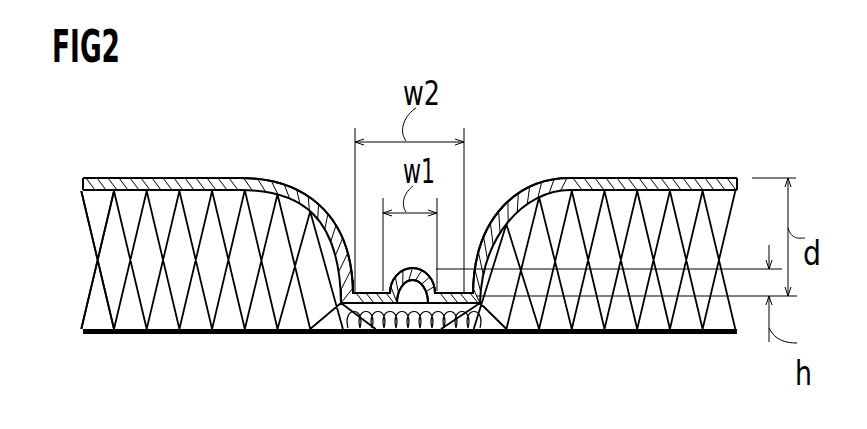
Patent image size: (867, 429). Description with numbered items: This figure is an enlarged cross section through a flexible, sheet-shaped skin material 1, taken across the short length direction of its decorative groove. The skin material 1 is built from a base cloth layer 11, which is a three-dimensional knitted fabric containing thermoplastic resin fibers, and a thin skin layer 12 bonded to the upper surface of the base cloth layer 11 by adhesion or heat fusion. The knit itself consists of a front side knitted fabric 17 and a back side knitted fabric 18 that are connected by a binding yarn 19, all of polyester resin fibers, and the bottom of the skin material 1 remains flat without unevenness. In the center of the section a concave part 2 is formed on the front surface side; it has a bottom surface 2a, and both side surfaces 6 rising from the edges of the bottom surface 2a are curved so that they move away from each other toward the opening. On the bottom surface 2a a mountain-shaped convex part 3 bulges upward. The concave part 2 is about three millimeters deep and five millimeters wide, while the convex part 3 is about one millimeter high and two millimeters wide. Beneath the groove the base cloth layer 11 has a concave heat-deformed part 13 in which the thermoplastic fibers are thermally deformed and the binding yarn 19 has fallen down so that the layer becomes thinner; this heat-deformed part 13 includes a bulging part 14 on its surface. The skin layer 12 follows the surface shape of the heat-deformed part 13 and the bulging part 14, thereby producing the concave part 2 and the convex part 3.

The skin material 1 is at (381, 244).
The concave part 2 is at (366, 219).
The bottom surface 2a is at (365, 288).
The convex part 3 is at (418, 262).
The side surfaces 6 is at (292, 184).
The base cloth layer 11 is at (79, 251).
The skin layer 12 is at (106, 180).
The heat-deformed part 13 is at (382, 333).
The bulging part 14 is at (416, 333).
The front side knitted fabric 17 is at (102, 195).
The back side knitted fabric 18 is at (107, 333).
The binding yarn 19 is at (115, 312).